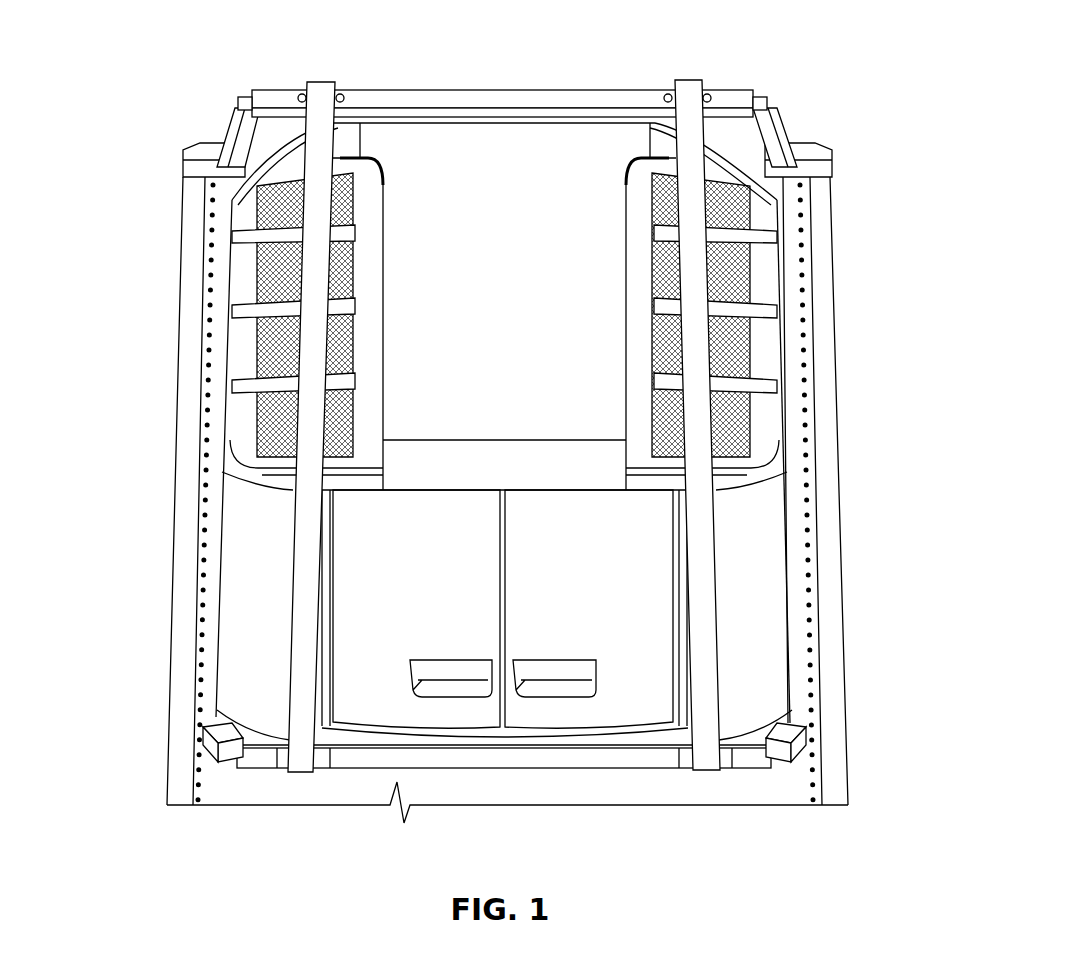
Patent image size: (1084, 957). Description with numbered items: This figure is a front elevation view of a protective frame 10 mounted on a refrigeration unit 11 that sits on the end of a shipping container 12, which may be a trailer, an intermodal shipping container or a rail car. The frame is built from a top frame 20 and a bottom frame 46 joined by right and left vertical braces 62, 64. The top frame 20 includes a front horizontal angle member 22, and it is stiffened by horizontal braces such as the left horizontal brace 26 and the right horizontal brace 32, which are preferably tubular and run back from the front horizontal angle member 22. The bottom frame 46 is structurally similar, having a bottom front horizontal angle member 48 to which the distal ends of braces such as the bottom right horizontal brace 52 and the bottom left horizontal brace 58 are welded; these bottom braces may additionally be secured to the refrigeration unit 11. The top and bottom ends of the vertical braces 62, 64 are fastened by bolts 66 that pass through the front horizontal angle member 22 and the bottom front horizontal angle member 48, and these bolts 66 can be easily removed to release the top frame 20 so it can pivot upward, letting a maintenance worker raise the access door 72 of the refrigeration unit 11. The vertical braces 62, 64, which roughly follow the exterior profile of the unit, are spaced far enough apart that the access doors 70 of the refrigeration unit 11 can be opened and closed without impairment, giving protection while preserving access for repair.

The protective frame 10 is at (508, 72).
The refrigeration unit 11 is at (501, 434).
The shipping container 12 is at (197, 165).
The top frame 20 is at (542, 82).
The front horizontal angle member 22 is at (427, 105).
The left horizontal brace 26 is at (238, 132).
The right horizontal brace 32 is at (782, 122).
The bottom frame 46 is at (500, 771).
The bottom front horizontal angle member 48 is at (593, 762).
The bottom right horizontal brace 52 is at (222, 732).
The bottom left horizontal brace 58 is at (786, 738).
The right vertical brace 62 is at (297, 773).
The left vertical brace 64 is at (708, 772).
The bolts 66 is at (343, 94).
The access doors 70 is at (390, 622).
The access door 72 is at (513, 338).